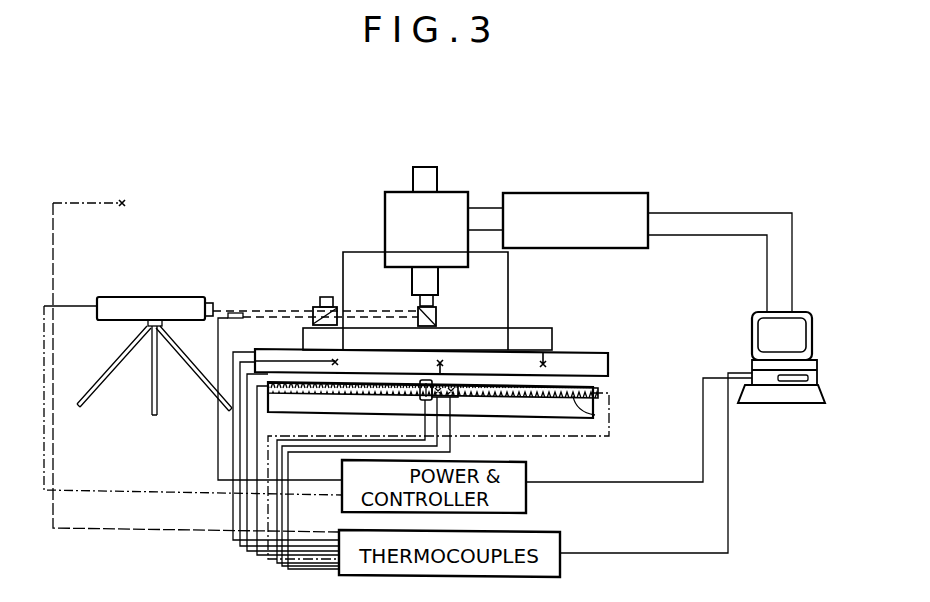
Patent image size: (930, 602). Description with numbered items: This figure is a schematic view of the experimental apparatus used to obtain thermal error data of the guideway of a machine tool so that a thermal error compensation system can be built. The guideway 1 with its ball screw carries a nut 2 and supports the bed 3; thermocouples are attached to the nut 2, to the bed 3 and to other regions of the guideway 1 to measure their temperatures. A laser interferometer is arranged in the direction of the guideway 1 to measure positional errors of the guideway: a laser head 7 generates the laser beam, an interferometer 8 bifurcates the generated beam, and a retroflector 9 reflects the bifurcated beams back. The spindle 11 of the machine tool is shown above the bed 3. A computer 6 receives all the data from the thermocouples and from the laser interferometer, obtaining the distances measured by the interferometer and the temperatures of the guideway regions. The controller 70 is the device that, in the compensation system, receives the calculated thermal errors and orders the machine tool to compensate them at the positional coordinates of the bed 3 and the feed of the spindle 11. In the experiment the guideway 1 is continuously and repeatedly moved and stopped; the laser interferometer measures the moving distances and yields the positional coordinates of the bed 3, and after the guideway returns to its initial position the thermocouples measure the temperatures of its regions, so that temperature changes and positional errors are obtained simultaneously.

The guideway 1 is at (595, 414).
The nut 2 is at (457, 398).
The bed 3 is at (598, 354).
The computer 6 is at (812, 326).
The laser head 7 is at (181, 297).
The interferometer 8 is at (313, 306).
The retroflector 9 is at (437, 308).
The spindle 11 is at (413, 283).
The controller 70 is at (598, 193).